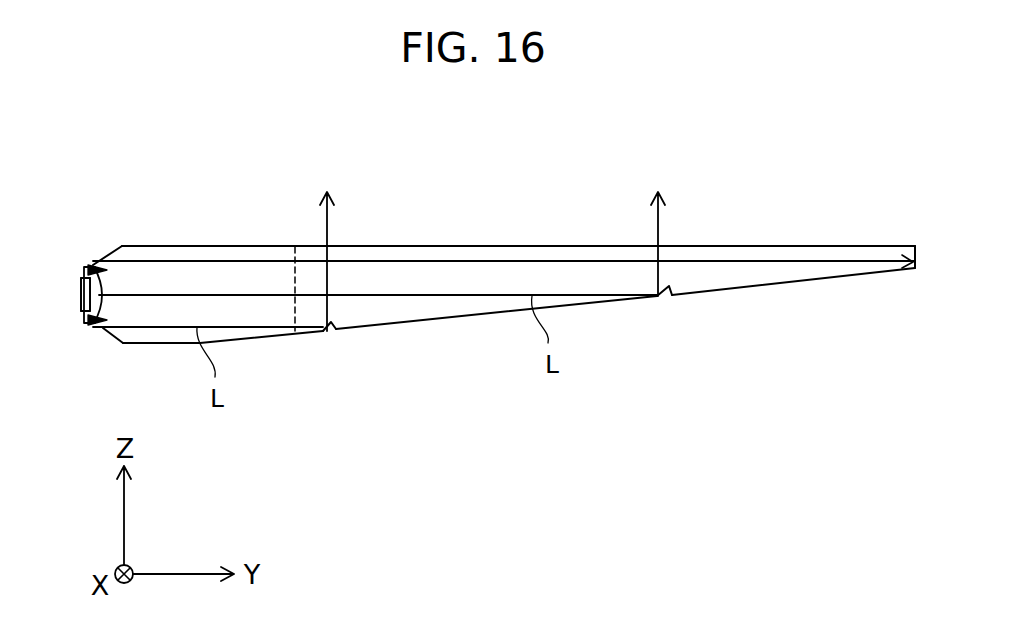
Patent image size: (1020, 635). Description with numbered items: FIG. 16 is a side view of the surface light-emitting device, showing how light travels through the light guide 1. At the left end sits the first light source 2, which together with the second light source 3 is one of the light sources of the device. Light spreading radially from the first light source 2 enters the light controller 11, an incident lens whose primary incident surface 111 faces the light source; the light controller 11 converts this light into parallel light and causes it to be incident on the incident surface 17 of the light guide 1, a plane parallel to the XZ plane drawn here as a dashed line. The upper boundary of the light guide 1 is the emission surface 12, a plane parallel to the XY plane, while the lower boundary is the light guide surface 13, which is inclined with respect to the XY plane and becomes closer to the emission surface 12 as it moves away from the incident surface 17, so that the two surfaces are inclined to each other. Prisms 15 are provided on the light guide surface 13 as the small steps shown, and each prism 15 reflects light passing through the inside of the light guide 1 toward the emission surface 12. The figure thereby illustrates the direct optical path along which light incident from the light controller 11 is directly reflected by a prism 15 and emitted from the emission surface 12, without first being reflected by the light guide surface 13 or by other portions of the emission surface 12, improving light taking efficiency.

The light guide 1 is at (418, 228).
The first light source 2 is at (52, 303).
The second light source 3 is at (81, 292).
The light controller 11 is at (99, 219).
The primary incident surface 111 is at (91, 326).
The emission surface 12 is at (570, 247).
The light guide surface 13 is at (457, 318).
The prism 15 is at (331, 331).
The incident surface 17 is at (293, 282).